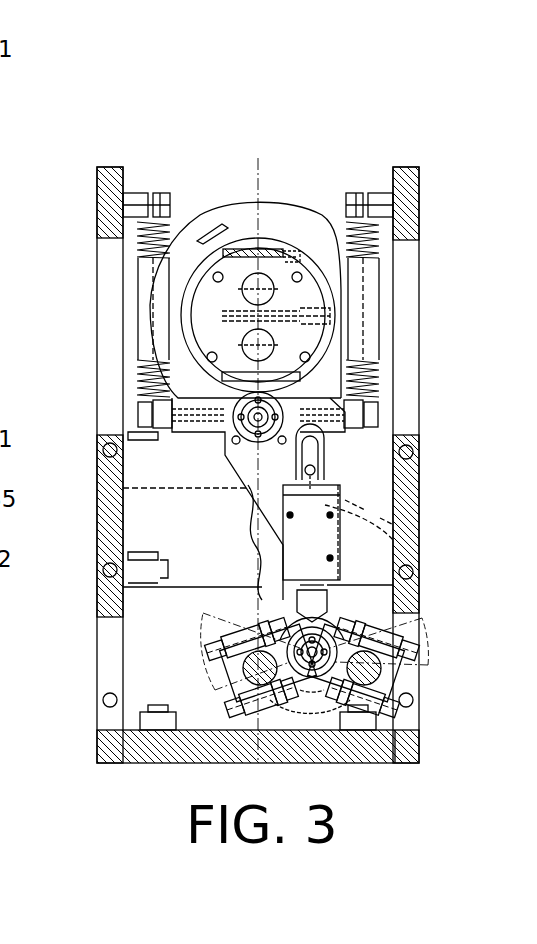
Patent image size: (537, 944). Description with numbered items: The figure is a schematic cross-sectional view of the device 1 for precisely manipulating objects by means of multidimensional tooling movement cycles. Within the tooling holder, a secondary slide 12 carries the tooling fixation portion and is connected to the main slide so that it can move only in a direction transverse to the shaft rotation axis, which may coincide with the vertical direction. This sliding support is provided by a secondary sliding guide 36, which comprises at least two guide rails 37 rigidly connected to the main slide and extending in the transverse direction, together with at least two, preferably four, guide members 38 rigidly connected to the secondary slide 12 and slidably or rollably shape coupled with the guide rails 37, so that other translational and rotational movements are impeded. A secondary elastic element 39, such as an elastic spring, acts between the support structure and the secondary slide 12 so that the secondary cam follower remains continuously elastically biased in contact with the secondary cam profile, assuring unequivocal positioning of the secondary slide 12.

The device 1 is at (439, 165).
The secondary elastic element 39 is at (143, 362).
The guide rails 37 is at (325, 452).
The secondary sliding guide 36 is at (325, 472).
The guide members 38 is at (425, 537).
The secondary slide 12 is at (330, 605).